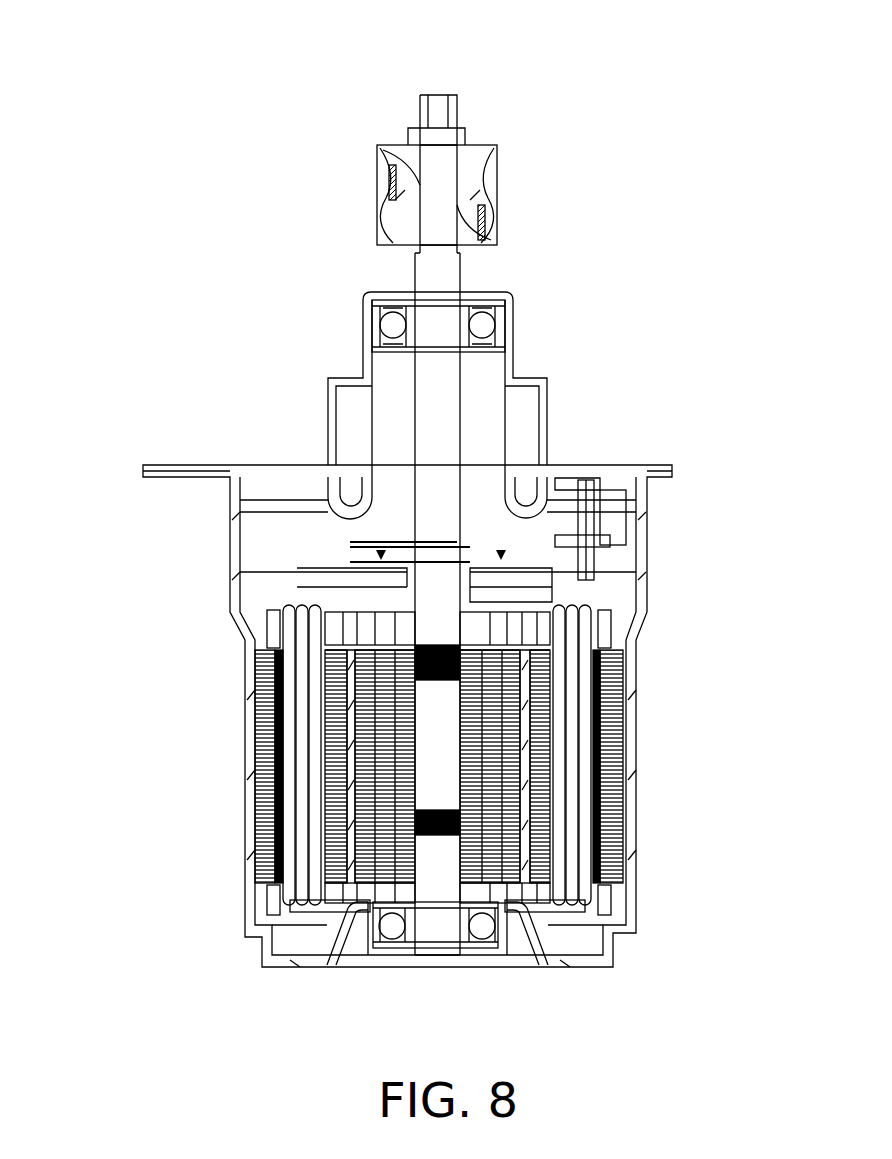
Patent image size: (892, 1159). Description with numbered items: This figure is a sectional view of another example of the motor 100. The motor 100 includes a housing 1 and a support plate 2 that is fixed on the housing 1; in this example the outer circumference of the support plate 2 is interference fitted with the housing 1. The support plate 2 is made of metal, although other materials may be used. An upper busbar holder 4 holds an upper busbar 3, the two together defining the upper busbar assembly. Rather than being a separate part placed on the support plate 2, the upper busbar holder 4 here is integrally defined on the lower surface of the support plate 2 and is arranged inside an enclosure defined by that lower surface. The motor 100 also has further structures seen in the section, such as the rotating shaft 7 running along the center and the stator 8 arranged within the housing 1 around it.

The motor 100 is at (373, 29).
The housing 1 is at (243, 747).
The support plate 2 is at (650, 497).
The upper busbar 3 is at (600, 535).
The upper busbar holder 4 is at (605, 515).
The rotating shaft 7 is at (432, 783).
The stator 8 is at (630, 837).